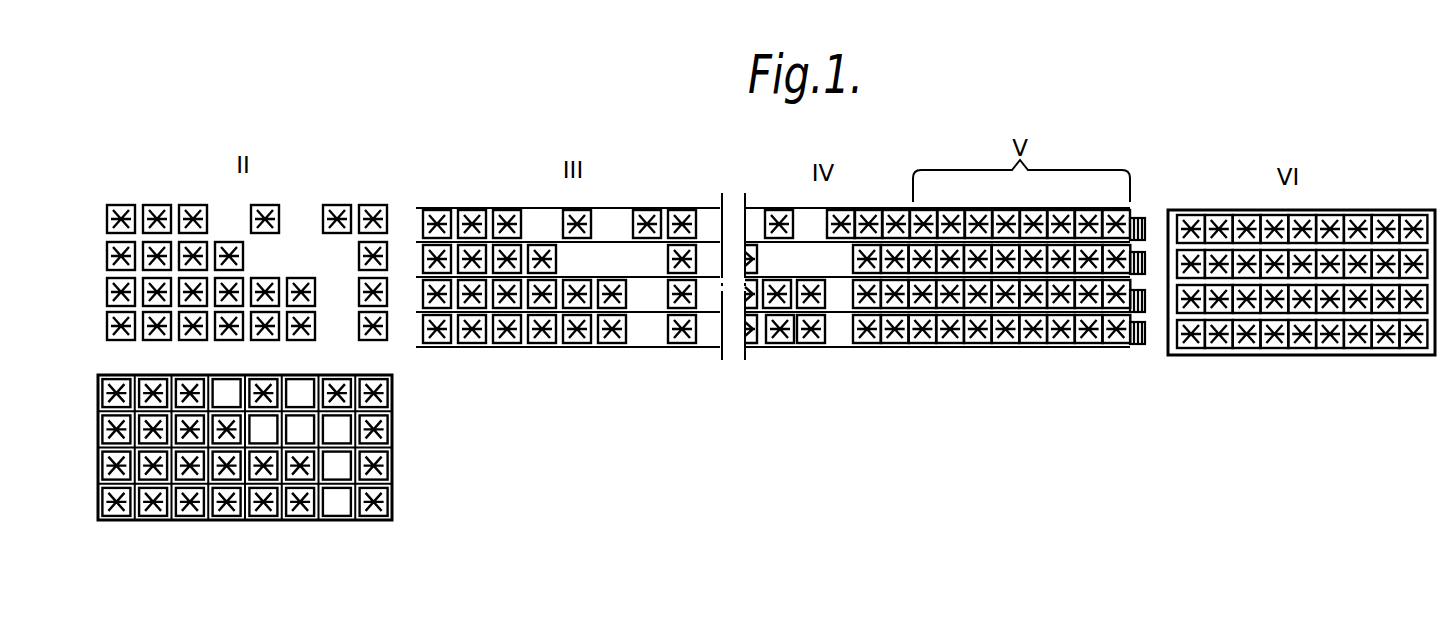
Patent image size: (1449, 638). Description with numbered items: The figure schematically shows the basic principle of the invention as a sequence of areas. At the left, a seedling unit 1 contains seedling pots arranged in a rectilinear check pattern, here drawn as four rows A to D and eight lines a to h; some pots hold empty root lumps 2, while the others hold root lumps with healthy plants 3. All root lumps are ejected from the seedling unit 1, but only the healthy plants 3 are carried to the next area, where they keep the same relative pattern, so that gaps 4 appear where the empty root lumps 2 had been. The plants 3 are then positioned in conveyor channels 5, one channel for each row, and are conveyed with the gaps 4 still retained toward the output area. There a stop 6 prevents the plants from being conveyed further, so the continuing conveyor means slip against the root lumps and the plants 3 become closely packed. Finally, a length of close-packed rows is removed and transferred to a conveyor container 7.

The seedling unit 1 is at (253, 467).
The empty root lumps 2 is at (298, 392).
The root lumps with healthy plants 3 is at (192, 205).
The gaps 4 is at (225, 218).
The conveyor channels 5 is at (490, 217).
The stop 6 is at (1147, 256).
The conveyor container 7 is at (1355, 212).